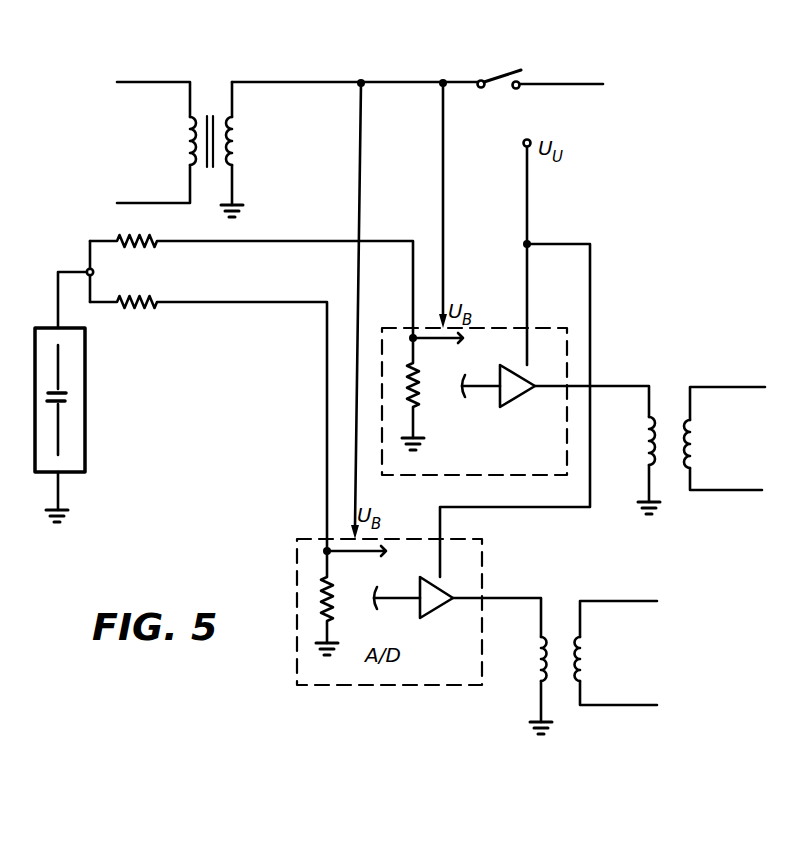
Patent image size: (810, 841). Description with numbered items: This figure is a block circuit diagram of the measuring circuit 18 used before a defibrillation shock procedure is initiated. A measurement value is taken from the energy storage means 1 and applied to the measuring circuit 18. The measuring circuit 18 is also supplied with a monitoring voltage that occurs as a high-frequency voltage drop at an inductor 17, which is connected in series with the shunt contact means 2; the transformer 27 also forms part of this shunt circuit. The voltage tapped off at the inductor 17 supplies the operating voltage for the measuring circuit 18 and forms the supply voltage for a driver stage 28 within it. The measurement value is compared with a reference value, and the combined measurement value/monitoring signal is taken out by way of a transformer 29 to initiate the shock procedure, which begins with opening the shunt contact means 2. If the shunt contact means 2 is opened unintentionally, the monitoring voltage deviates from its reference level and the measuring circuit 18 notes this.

The energy storage means 1 is at (85, 400).
The shunt contact means 2 is at (493, 53).
The inductor 17 is at (233, 135).
The measuring circuit 18 is at (567, 310).
The transformer 27 is at (197, 128).
The driver stage 28 is at (521, 397).
The transformer 29 is at (663, 415).